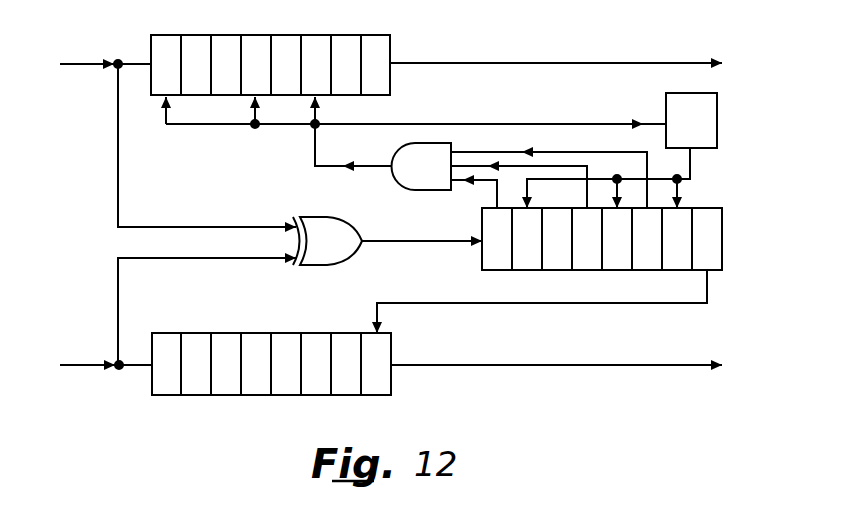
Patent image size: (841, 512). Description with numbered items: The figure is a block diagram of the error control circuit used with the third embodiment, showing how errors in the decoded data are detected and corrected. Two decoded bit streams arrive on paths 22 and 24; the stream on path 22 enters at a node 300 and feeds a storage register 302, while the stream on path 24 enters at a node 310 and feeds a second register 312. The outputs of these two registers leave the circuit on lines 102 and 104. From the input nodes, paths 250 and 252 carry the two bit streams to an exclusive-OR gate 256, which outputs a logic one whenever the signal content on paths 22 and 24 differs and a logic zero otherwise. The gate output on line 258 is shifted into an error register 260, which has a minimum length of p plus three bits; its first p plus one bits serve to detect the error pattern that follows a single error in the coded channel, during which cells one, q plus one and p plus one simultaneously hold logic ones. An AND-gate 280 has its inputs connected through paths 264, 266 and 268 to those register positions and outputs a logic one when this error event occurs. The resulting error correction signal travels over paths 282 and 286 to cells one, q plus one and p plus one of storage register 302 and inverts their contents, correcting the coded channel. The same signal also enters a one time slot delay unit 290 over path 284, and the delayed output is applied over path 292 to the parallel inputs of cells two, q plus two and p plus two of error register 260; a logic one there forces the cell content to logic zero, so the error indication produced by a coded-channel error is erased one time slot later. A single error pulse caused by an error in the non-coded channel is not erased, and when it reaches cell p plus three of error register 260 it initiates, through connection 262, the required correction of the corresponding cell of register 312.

The decoded bit stream path 22 is at (95, 66).
The decoded bit stream path 24 is at (96, 362).
The first output line 102 is at (648, 60).
The second output line 104 is at (645, 362).
The path 250 is at (118, 180).
The path 252 is at (118, 312).
The exclusive-OR gate 256 is at (309, 214).
The XOR gate output line 258 is at (422, 252).
The error register 260 is at (556, 271).
The connection 262 is at (652, 301).
The path 264 is at (485, 186).
The path 266 is at (588, 176).
The path 268 is at (565, 152).
The AND-gate 280 is at (415, 192).
The path 282 is at (316, 162).
The path 284 is at (526, 122).
The path 286 is at (232, 127).
The one time slot delay unit 290 is at (698, 91).
The path 292 is at (693, 153).
The input node 300 is at (142, 60).
The storage register 302 is at (386, 36).
The second input node 310 is at (140, 368).
The register 312 is at (373, 395).